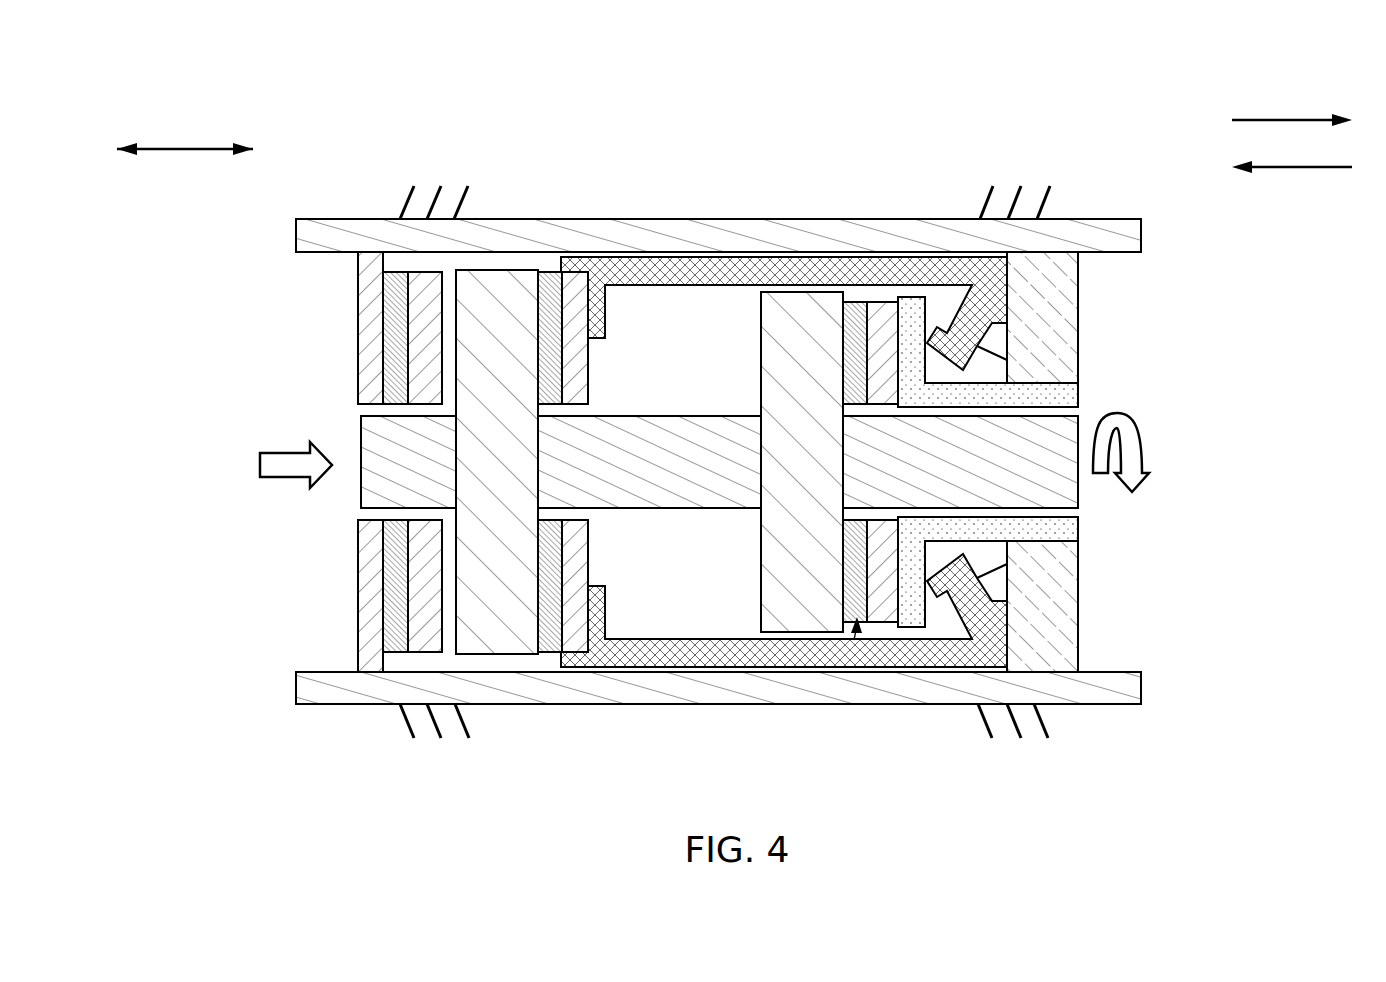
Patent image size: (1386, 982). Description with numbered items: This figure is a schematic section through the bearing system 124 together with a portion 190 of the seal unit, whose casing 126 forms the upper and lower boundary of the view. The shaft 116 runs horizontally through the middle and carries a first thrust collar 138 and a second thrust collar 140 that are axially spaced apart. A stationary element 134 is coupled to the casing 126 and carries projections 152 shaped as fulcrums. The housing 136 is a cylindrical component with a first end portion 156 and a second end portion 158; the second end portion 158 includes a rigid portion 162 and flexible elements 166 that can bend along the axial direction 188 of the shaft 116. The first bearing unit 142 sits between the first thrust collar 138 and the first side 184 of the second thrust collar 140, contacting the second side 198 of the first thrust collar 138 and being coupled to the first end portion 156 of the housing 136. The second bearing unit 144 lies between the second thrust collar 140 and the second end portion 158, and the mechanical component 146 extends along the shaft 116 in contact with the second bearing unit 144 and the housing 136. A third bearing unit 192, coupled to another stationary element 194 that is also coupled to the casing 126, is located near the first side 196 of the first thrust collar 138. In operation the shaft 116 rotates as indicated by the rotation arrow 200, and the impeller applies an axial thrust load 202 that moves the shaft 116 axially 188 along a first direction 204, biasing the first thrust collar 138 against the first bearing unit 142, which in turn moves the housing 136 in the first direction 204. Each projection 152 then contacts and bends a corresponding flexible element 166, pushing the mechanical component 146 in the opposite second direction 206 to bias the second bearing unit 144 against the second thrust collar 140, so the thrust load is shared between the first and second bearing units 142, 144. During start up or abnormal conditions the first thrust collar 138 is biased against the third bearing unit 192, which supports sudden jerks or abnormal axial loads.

The shaft 116 is at (366, 491).
The bearing system 124 is at (1115, 355).
The casing 126 is at (707, 233).
The stationary element 134 is at (1072, 285).
The housing 136 is at (793, 268).
The first thrust collar 138 is at (514, 640).
The second thrust collar 140 is at (788, 618).
The first bearing unit 142 is at (600, 372).
The second bearing unit 144 is at (880, 660).
The mechanical component 146 is at (1072, 528).
The projections 152 is at (1002, 348).
The first end portion 156 is at (607, 313).
The second end portion 158 is at (962, 310).
The rigid portion 162 is at (998, 262).
The flexible elements 166 is at (1000, 378).
The first side 184 is at (762, 595).
The axial direction 188 is at (185, 149).
The portion of the seal unit 190 is at (284, 236).
The third bearing unit 192 is at (420, 657).
The stationary element 194 is at (364, 308).
The first side 196 is at (457, 642).
The second side 198 is at (541, 512).
The rotation 200 is at (1142, 440).
The axial thrust load 202 is at (275, 452).
The first direction 204 is at (1265, 120).
The second direction 206 is at (1318, 170).